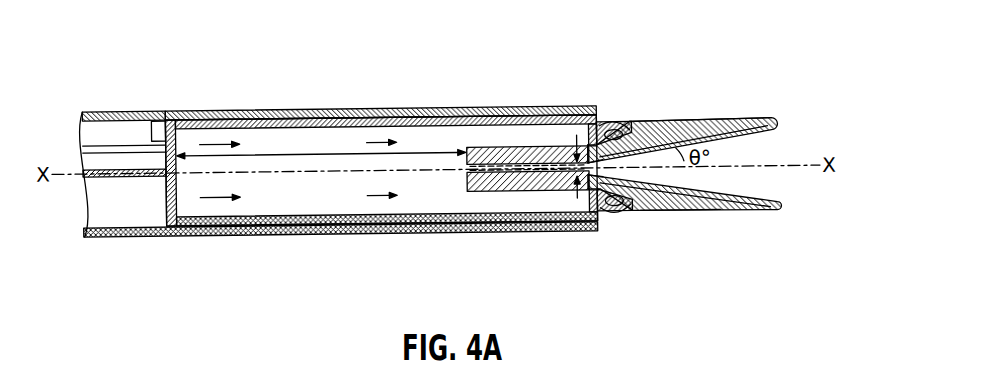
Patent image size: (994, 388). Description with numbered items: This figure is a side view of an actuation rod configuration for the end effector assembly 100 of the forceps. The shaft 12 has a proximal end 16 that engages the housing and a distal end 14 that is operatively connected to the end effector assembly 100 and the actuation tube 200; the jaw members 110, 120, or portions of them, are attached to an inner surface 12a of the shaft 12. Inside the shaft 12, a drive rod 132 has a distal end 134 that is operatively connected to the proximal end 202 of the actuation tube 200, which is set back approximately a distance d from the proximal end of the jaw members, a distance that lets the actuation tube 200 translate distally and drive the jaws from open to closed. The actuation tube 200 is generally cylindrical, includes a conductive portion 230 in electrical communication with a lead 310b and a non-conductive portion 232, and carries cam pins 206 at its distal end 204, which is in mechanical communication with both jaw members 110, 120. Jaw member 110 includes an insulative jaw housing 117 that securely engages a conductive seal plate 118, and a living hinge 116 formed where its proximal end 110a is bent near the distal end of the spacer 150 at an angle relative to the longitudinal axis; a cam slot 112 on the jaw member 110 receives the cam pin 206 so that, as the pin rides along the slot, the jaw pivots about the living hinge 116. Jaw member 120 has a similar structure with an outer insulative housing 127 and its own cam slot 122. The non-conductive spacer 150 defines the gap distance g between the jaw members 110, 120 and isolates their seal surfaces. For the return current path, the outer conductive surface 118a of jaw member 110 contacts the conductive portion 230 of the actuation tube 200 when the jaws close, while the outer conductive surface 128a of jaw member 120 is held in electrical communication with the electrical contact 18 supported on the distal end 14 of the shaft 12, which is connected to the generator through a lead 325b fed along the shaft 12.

The shaft 12 is at (318, 105).
The inner surface 12a is at (267, 232).
The distal end 14 is at (608, 204).
The proximal end 16 is at (100, 107).
The electrical contact 18 is at (593, 208).
The end effector assembly 100 is at (538, 208).
The jaw member 110 is at (767, 116).
The proximal end 110a is at (583, 144).
The cam slot 112 is at (617, 124).
The living hinge 116 is at (625, 129).
The insulative jaw housing 117 is at (727, 122).
The seal plate 118 is at (772, 131).
The outer conductive surface 118a is at (703, 122).
The jaw member 120 is at (769, 218).
The cam slot 122 is at (607, 201).
The outer insulative housing 127 is at (697, 210).
The outer conductive surface 128a is at (690, 214).
The drive rod 132 is at (143, 175).
The distal end 134 is at (147, 164).
The spacer 150 is at (463, 172).
The actuation tube 200 is at (480, 114).
The proximal end 202 is at (165, 202).
The distal end 204 is at (602, 126).
The cam pin 206 is at (593, 116).
The conductive portion 230 is at (387, 106).
The non-conductive portion 232 is at (355, 225).
The lead 310b is at (153, 136).
The lead 325b is at (293, 235).
The distance d is at (328, 153).
The gap distance g is at (613, 218).